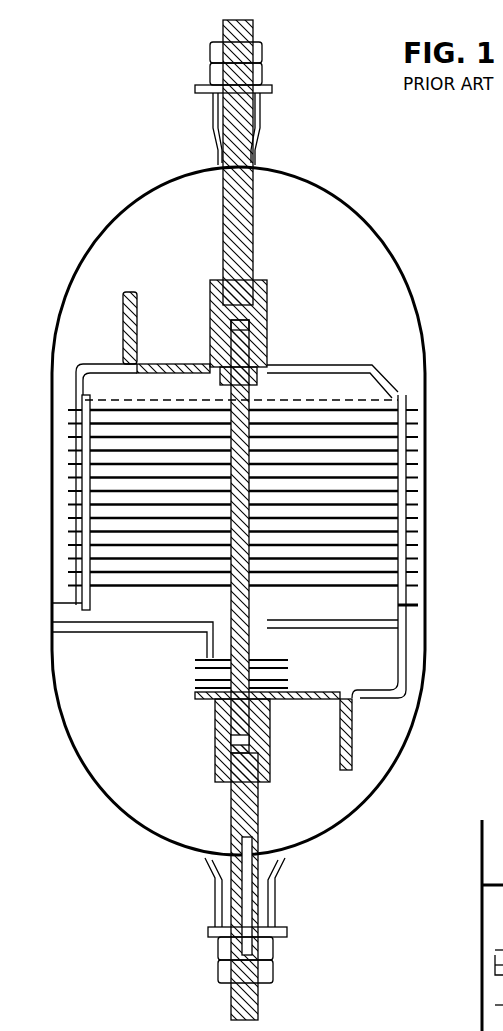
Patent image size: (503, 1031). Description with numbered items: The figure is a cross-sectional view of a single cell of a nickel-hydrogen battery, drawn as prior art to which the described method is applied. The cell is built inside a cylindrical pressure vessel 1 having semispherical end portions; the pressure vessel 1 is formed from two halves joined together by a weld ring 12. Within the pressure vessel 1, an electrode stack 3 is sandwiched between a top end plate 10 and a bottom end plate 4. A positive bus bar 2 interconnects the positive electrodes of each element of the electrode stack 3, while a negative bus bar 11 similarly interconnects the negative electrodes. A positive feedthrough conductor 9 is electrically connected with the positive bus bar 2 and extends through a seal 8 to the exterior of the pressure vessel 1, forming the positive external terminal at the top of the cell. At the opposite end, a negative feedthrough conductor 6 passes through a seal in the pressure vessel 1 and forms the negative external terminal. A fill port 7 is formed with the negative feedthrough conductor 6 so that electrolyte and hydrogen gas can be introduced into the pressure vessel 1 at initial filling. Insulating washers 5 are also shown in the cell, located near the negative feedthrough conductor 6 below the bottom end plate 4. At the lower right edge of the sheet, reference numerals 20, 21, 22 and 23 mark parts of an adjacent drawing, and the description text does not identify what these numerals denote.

The pressure vessel 1 is at (422, 313).
The positive bus bar 2 is at (75, 439).
The electrode stack 3 is at (122, 525).
The bottom end plate 4 is at (147, 613).
The insulating washers 5 is at (200, 687).
The negative feedthrough conductor 6 is at (237, 798).
The fill port 7 is at (245, 900).
The seal 8 is at (255, 133).
The positive feedthrough conductor 9 is at (253, 258).
The top end plate 10 is at (373, 390).
The negative bus bar 11 is at (408, 468).
The weld ring 12 is at (418, 610).
The element 20 is at (502, 1010).
The element 21 is at (502, 938).
The element 22 is at (502, 960).
The element 23 is at (502, 900).